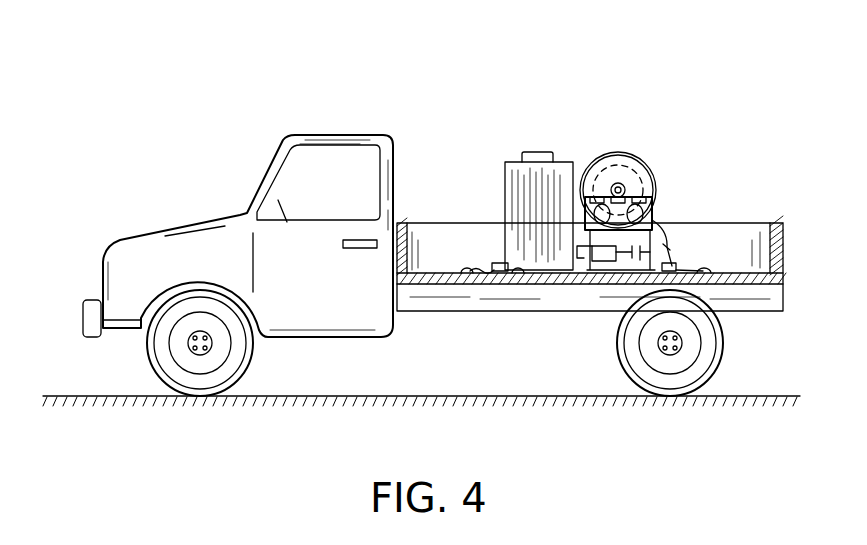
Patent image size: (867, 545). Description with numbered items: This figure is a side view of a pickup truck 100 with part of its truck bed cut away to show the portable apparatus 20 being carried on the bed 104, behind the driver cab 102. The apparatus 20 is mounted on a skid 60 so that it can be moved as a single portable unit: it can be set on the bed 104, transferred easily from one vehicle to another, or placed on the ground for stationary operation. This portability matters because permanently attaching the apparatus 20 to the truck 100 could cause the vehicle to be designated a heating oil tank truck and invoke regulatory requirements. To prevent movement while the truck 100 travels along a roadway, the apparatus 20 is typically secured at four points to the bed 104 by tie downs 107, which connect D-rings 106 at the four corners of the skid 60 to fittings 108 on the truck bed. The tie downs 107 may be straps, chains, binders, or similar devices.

The pickup truck 100 is at (368, 103).
The driver cab 102 is at (312, 135).
The bed 104 is at (715, 270).
The apparatus 20 is at (598, 140).
The skid 60 is at (517, 272).
The D-rings 106 is at (665, 245).
The tie downs 107 is at (490, 263).
The fittings 108 is at (713, 272).